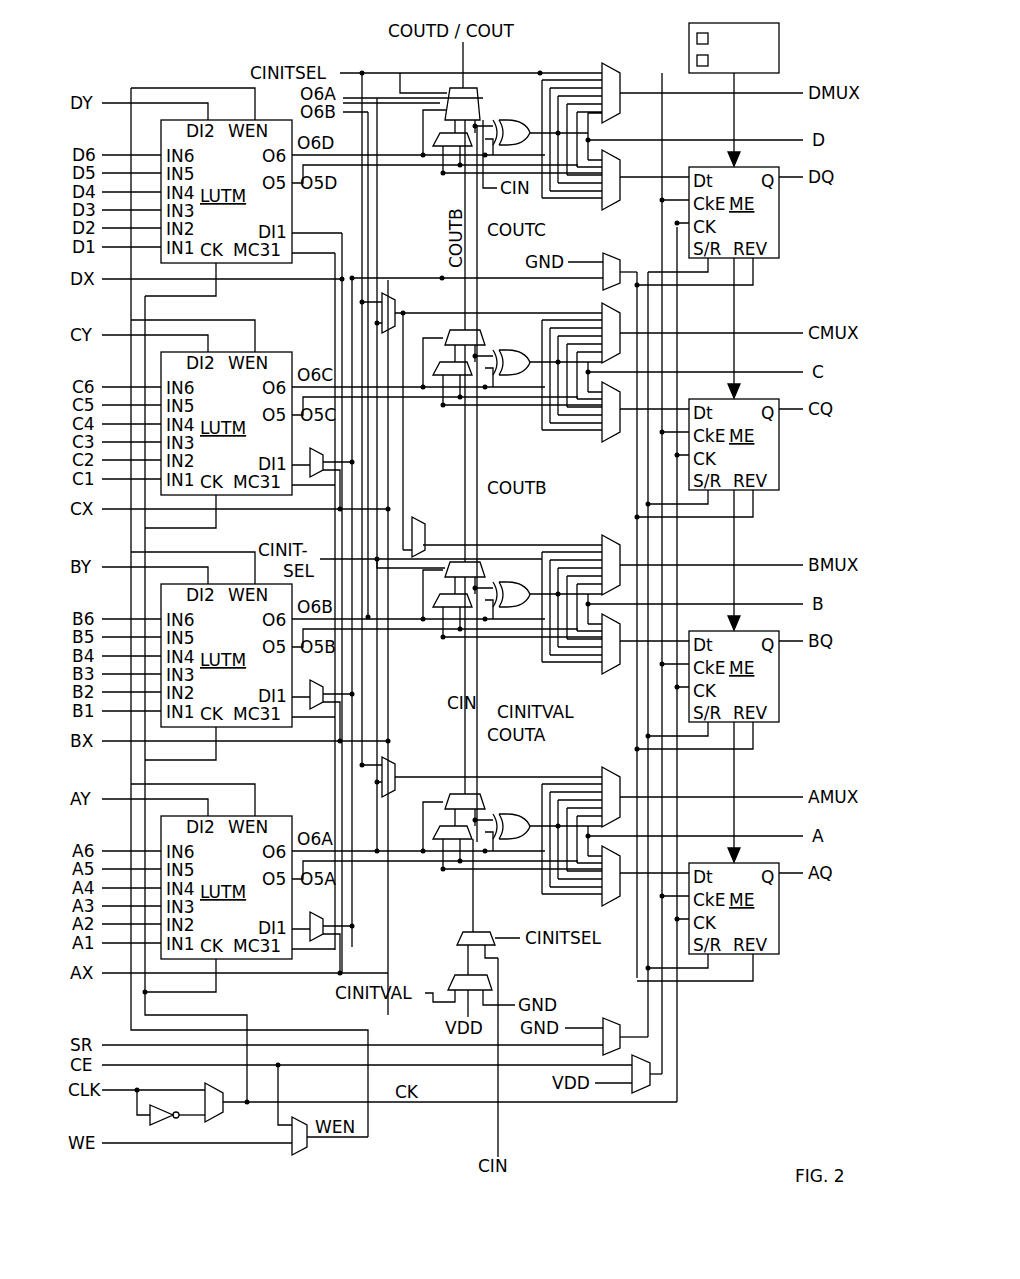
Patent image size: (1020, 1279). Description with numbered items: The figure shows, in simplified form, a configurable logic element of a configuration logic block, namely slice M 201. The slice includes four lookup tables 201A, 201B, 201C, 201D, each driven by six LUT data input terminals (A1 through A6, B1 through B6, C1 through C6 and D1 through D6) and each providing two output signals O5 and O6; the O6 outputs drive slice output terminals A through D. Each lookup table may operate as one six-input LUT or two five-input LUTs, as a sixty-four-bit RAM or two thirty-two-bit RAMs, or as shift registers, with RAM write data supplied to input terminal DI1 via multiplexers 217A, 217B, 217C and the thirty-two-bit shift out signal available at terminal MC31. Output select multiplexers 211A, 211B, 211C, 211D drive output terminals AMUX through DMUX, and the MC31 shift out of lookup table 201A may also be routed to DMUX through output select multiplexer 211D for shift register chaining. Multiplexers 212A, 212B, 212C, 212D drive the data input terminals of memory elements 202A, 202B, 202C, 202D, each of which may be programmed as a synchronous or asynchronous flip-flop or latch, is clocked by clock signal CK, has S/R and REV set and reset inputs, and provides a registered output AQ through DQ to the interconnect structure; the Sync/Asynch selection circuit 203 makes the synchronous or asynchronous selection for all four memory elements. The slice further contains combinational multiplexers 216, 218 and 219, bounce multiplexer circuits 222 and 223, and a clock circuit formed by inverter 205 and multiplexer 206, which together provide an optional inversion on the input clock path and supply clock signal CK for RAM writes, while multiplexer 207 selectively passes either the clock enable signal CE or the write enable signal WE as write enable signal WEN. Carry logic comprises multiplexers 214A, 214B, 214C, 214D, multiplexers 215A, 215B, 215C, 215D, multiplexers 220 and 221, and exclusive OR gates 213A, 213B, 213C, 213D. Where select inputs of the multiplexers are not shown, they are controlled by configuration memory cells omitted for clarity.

The slice M 201 is at (184, 65).
The lookup table (LUTM) 201D is at (226, 191).
The lookup table (LUTM) 201C is at (226, 423).
The lookup table (LUTM) 201B is at (226, 655).
The lookup table (LUTM) 201A is at (226, 887).
The memory element 202D is at (734, 213).
The memory element 202C is at (734, 445).
The memory element 202B is at (734, 677).
The memory element 202A is at (734, 909).
The Sync/Asynch selection circuit 203 is at (688, 52).
The inverter 205 is at (158, 1128).
The multiplexer 206 is at (216, 1115).
The multiplexer 207 is at (298, 1155).
The output select multiplexer 211D is at (622, 105).
The output select multiplexer 211C is at (605, 304).
The output select multiplexer 211B is at (605, 536).
The output select multiplexer 211A is at (605, 768).
The multiplexer 212D is at (622, 185).
The multiplexer 212C is at (603, 443).
The multiplexer 212B is at (603, 675).
The multiplexer 212A is at (603, 907).
The exclusive OR gate 213D is at (508, 121).
The exclusive OR gate 213C is at (508, 351).
The exclusive OR gate 213B is at (508, 583).
The exclusive OR gate 213A is at (508, 815).
The carry multiplexer 214D is at (464, 88).
The carry multiplexer 214C is at (455, 330).
The carry multiplexer 214B is at (455, 562).
The carry multiplexer 214A is at (455, 794).
The carry multiplexer 215D is at (445, 148).
The carry multiplexer 215C is at (462, 378).
The carry multiplexer 215B is at (462, 610).
The carry multiplexer 215A is at (462, 842).
The combinational multiplexer 216 is at (386, 292).
The multiplexer 217C is at (316, 480).
The multiplexer 217B is at (316, 712).
The multiplexer 217A is at (316, 944).
The combinational multiplexer 218 is at (412, 530).
The combinational multiplexer 219 is at (391, 797).
The carry logic multiplexer 220 is at (500, 975).
The carry logic multiplexer 221 is at (610, 255).
The bounce multiplexer circuit 222 is at (604, 1018).
The bounce multiplexer circuit 223 is at (640, 1095).